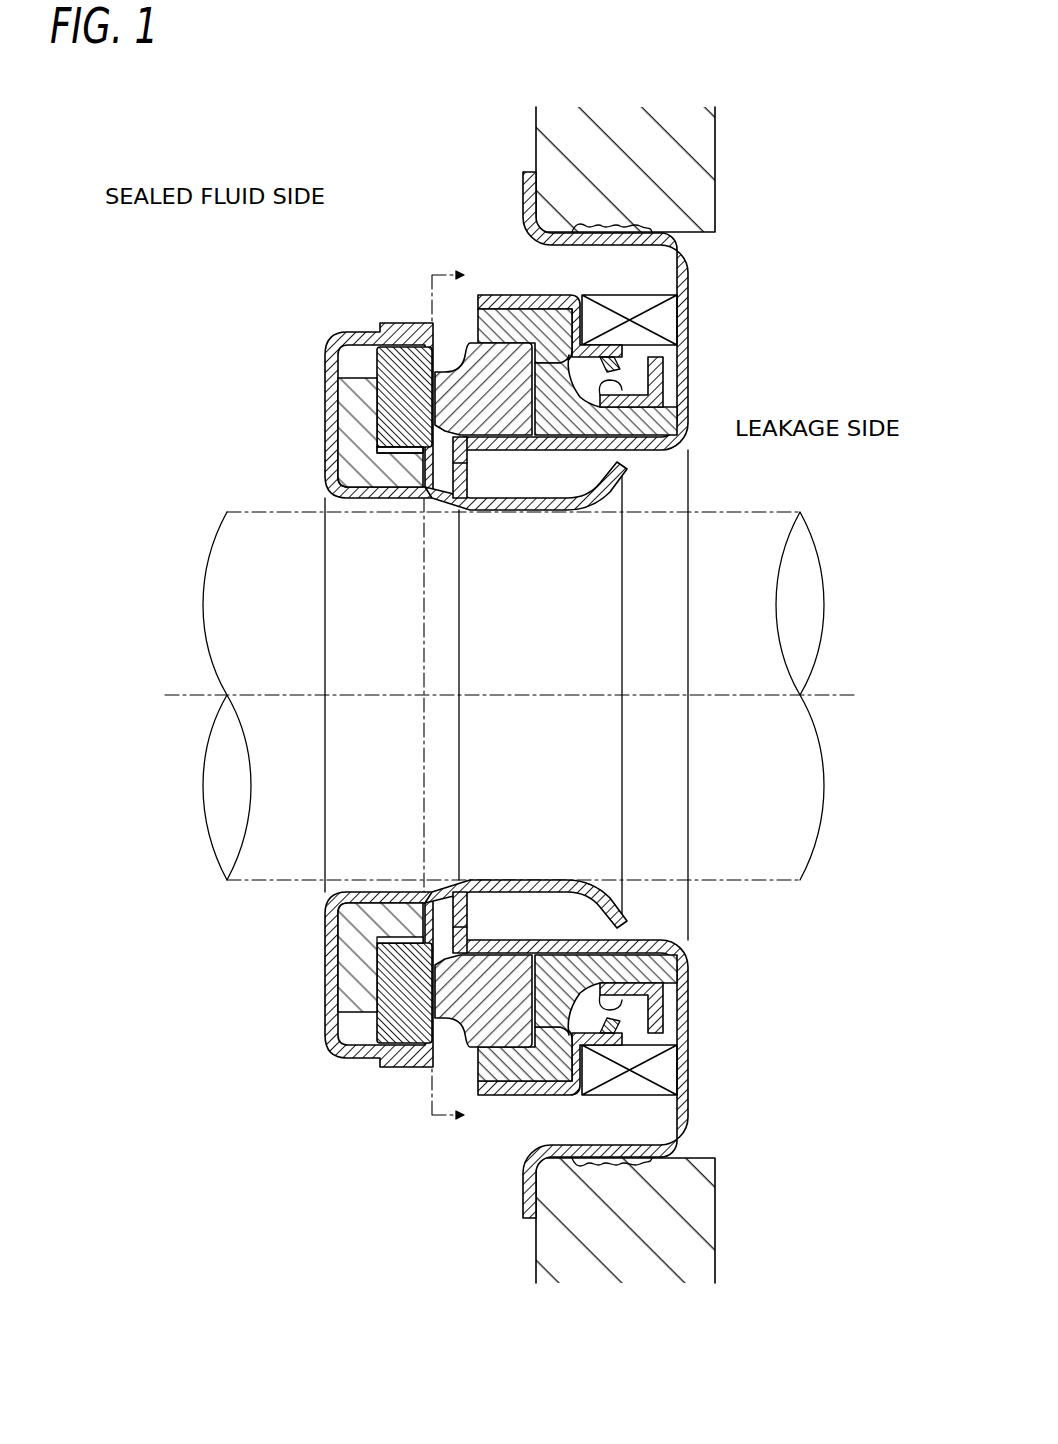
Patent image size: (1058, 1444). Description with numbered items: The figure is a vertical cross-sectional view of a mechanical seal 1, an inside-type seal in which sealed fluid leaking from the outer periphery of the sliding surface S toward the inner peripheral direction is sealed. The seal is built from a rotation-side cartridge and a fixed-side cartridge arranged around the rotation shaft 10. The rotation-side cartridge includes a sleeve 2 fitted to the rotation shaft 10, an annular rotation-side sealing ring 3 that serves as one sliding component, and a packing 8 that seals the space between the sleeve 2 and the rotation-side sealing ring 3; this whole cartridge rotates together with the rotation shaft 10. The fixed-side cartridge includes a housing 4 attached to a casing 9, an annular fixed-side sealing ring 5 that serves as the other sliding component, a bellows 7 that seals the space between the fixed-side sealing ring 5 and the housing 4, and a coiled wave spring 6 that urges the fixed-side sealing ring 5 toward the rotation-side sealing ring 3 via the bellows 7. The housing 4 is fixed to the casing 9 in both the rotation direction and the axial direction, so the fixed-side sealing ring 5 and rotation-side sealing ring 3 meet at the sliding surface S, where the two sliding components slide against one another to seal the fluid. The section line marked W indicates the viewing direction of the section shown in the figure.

The mechanical seal 1 is at (197, 350).
The sleeve 2 is at (333, 412).
The rotation-side sealing ring 3 is at (398, 372).
The housing 4 is at (688, 270).
The fixed-side sealing ring 5 is at (500, 408).
The coiled wave spring 6 is at (660, 320).
The bellows 7 is at (508, 328).
The packing 8 is at (360, 446).
The casing 9 is at (557, 148).
The rotation shaft 10 is at (270, 884).
The sliding surface S is at (425, 455).
The section line W is at (445, 696).